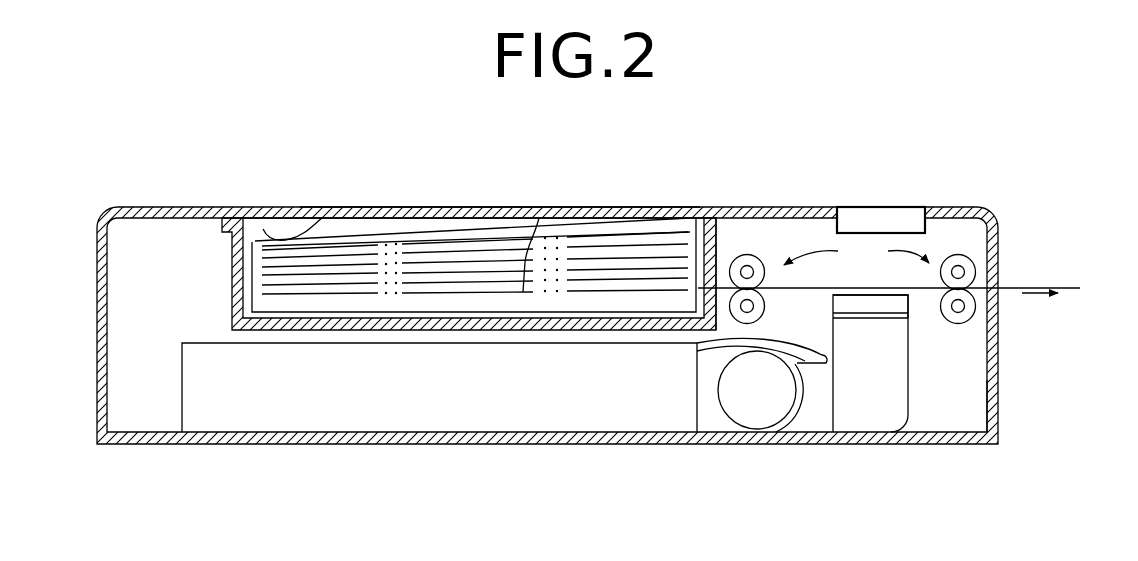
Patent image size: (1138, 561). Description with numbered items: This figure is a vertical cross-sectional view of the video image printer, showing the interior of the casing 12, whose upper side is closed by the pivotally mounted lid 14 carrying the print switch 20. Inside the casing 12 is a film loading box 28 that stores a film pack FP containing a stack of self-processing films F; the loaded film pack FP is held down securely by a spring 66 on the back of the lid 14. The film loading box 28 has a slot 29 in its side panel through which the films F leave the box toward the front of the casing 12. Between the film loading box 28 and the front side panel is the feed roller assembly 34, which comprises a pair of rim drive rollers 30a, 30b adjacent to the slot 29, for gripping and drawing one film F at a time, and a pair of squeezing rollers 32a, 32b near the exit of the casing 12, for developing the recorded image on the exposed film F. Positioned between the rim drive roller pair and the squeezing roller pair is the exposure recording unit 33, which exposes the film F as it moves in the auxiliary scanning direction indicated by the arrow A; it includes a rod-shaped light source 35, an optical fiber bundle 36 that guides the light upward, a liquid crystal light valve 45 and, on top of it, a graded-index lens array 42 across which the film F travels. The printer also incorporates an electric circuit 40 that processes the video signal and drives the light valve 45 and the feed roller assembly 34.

The casing 12 is at (97, 238).
The lid 14 is at (465, 207).
The print switch 20 is at (896, 224).
The film loading box 28 is at (390, 228).
The slot 29 is at (716, 279).
The spring 66 is at (298, 236).
The rim drive roller 30a is at (755, 257).
The rim drive roller 30b is at (762, 322).
The squeezing roller 32a is at (1000, 241).
The squeezing roller 32b is at (967, 318).
The feed roller assembly 34 is at (856, 257).
The light source 35 is at (767, 420).
The optical fiber bundle 36 is at (882, 408).
The electric circuit 40 is at (410, 417).
The graded-index lens array 42 is at (900, 305).
The liquid crystal light valve 45 is at (858, 317).
The exposure recording unit 33 is at (967, 396).
The self-processing film F is at (539, 216).
The film pack FP is at (601, 220).
The auxiliary scanning direction A is at (1040, 309).